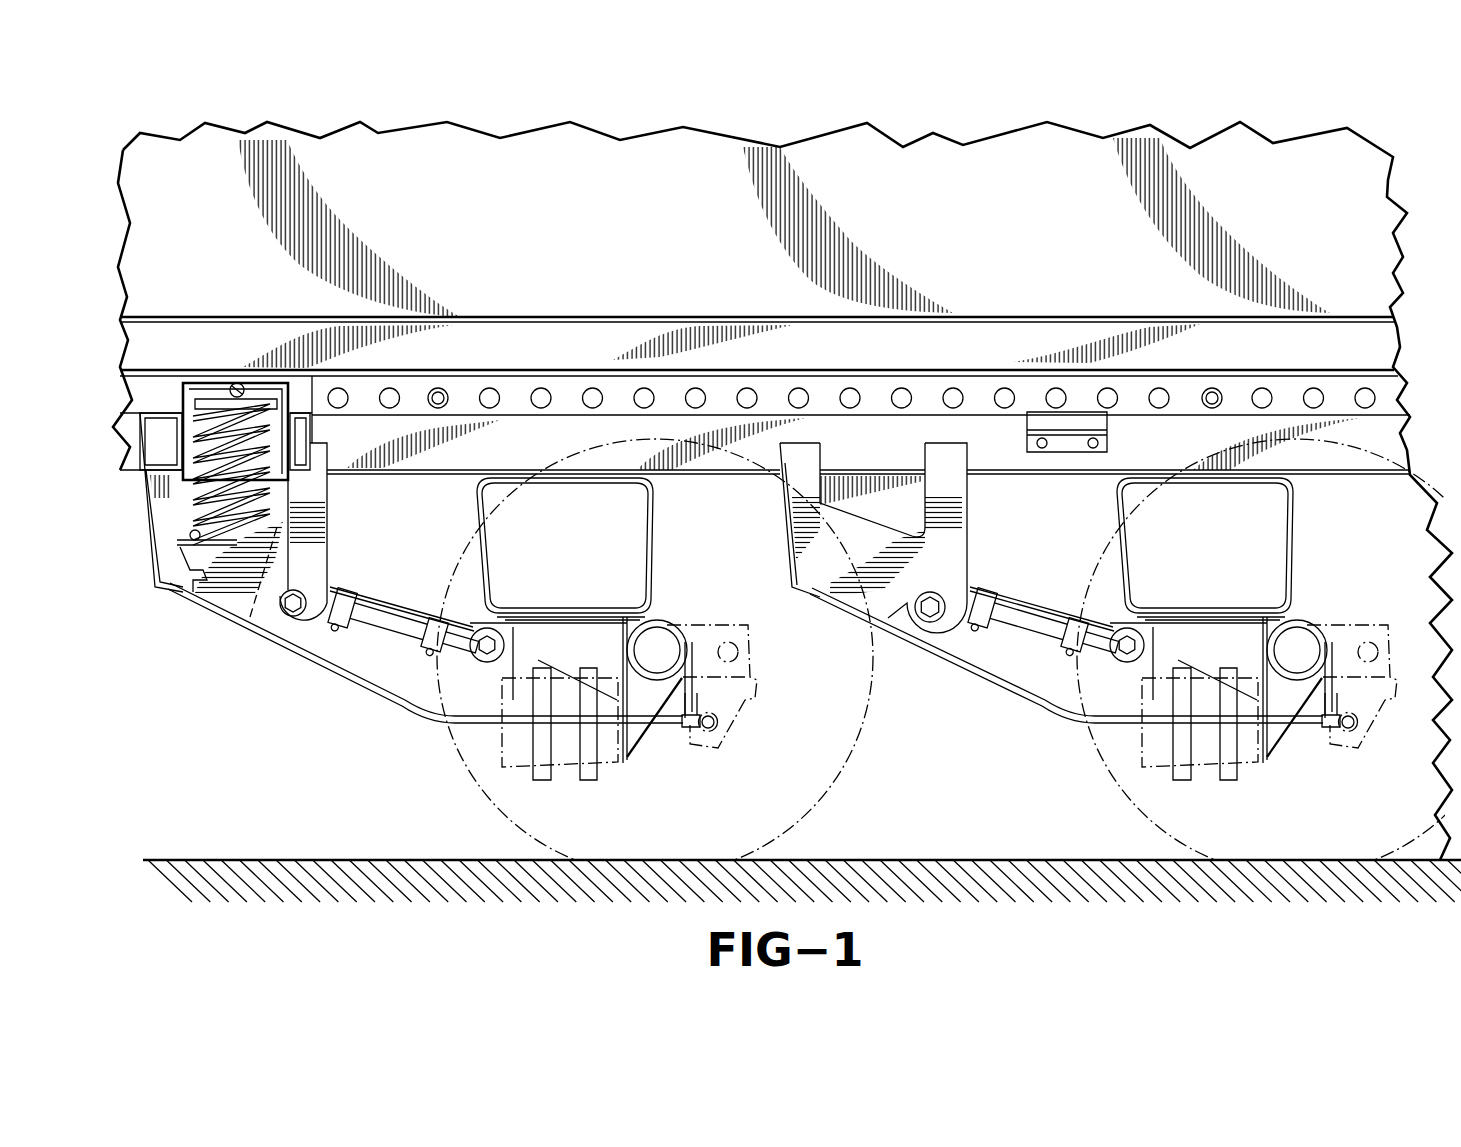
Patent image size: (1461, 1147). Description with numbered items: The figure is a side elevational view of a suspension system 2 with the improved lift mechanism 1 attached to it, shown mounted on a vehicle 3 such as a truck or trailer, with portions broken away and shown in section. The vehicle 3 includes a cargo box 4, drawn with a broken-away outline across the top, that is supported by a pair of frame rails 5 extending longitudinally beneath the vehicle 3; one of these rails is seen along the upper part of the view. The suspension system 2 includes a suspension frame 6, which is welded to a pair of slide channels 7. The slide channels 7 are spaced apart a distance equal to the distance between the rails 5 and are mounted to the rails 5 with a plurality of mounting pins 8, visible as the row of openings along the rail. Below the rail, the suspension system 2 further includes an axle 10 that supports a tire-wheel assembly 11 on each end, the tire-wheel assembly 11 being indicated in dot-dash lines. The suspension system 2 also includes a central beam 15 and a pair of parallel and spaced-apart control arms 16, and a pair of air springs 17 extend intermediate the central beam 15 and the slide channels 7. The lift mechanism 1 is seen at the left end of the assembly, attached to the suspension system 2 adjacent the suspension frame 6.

The lift mechanism 1 is at (178, 513).
The suspension system 2 is at (280, 723).
The vehicle 3 is at (285, 380).
The cargo box 4 is at (1363, 190).
The frame rails 5 is at (1392, 394).
The suspension frame 6 is at (313, 551).
The slide channels 7 is at (467, 455).
The mounting pins 8 is at (440, 392).
The axle 10 is at (663, 620).
The tire-wheel assembly 11 is at (486, 806).
The central beam 15 is at (412, 680).
The control arms 16 is at (383, 623).
The air springs 17 is at (617, 518).